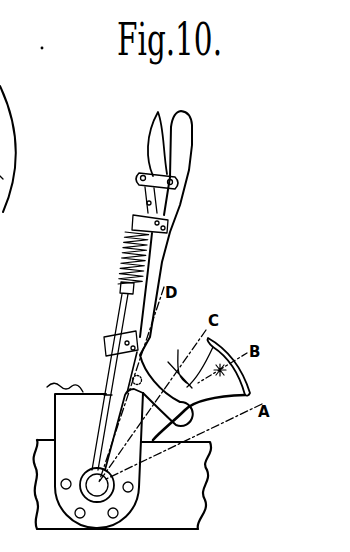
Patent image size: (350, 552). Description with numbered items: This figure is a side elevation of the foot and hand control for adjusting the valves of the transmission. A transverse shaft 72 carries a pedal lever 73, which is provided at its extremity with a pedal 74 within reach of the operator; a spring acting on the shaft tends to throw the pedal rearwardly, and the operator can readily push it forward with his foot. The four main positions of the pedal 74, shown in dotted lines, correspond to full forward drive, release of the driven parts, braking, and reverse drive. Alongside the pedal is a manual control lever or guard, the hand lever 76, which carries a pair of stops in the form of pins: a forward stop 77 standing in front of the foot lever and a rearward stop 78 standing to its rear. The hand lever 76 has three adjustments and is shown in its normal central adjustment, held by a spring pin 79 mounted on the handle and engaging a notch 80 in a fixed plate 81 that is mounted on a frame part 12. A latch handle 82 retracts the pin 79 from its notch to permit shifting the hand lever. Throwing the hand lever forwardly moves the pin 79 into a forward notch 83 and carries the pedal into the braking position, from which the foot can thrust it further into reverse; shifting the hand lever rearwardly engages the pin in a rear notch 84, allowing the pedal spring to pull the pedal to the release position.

The frame part 12 is at (122, 484).
The transverse shaft 72 is at (86, 491).
The pedal lever 73 is at (174, 358).
The pedal 74 is at (230, 343).
The hand lever 76 is at (176, 268).
The forward stop 77 is at (131, 377).
The rearward stop 78 is at (193, 424).
The spring pin 79 is at (121, 309).
The notch 80 is at (110, 396).
The fixed plate 81 is at (55, 430).
The latch handle 82 is at (150, 131).
The forward notch 83 is at (50, 391).
The rear notch 84 is at (112, 420).